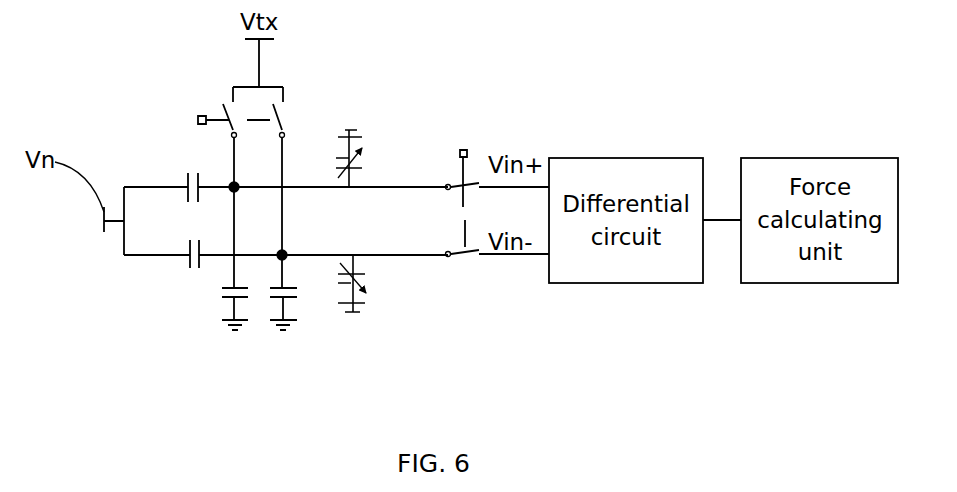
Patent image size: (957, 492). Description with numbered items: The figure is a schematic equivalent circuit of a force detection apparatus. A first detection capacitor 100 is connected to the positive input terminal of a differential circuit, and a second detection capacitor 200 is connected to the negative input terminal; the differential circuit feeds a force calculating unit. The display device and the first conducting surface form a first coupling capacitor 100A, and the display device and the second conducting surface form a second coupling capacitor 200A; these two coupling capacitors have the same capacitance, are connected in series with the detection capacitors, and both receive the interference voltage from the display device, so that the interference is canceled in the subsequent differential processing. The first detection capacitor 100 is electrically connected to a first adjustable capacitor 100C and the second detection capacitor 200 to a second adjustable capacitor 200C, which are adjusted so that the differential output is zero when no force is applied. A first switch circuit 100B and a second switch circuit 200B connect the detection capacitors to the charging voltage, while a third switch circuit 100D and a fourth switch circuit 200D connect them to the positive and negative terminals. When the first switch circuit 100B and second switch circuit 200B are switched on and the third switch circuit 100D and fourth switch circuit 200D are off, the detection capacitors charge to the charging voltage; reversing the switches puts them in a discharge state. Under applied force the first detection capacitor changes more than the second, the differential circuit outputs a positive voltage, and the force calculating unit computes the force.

The first detection capacitor 100 is at (222, 290).
The second detection capacitor 200 is at (297, 290).
The first coupling capacitor 100A is at (190, 173).
The second coupling capacitor 200A is at (190, 266).
The first switch circuit 100B is at (231, 101).
The second switch circuit 200B is at (306, 85).
The first adjustable capacitor 100C is at (371, 152).
The second adjustable capacitor 200C is at (376, 282).
The third switch circuit 100D is at (462, 181).
The fourth switch circuit 200D is at (460, 251).